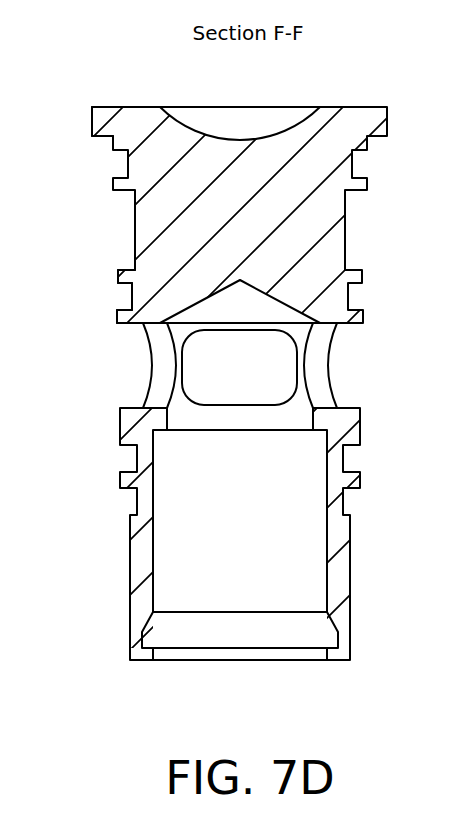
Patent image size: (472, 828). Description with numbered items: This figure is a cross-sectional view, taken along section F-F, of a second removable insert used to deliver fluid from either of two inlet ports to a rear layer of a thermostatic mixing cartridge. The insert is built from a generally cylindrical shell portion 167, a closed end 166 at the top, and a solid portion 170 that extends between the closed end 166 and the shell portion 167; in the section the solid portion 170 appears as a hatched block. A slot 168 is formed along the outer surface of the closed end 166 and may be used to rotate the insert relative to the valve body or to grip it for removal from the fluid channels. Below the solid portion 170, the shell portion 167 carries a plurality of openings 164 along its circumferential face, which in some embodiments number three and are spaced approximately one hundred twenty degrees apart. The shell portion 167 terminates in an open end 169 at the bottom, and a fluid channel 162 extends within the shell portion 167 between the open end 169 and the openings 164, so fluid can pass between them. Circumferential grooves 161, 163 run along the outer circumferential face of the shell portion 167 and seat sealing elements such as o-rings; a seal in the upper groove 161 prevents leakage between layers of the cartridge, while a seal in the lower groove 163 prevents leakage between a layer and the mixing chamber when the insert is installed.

The circumferential groove 161 is at (121, 297).
The fluid channel 162 is at (237, 592).
The circumferential groove 163 is at (122, 460).
The opening 164 is at (137, 359).
The closed end 166 is at (117, 124).
The shell portion 167 is at (140, 543).
The slot 168 is at (240, 124).
The open end 169 is at (344, 661).
The solid portion 170 is at (327, 203).